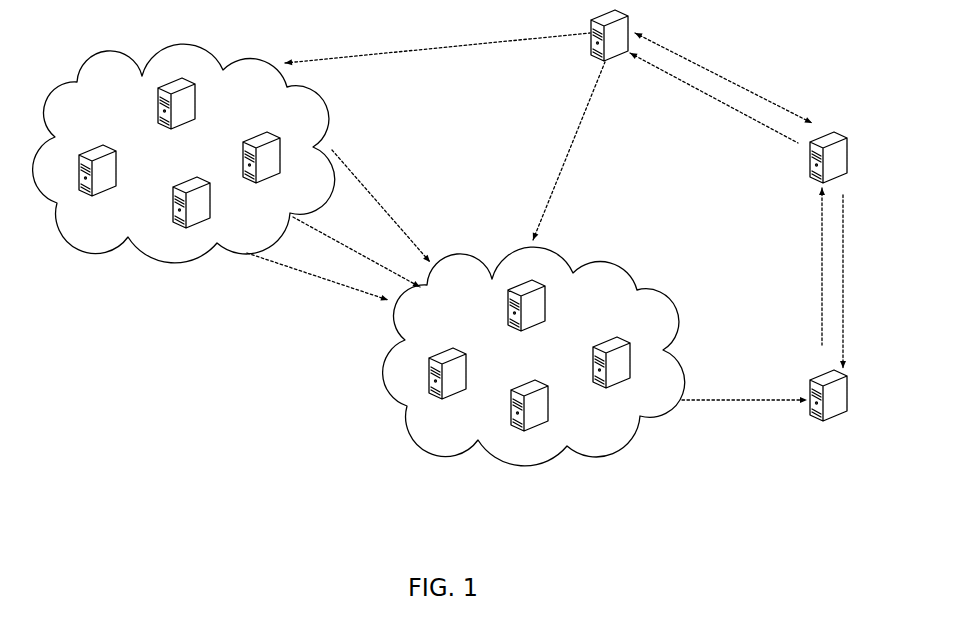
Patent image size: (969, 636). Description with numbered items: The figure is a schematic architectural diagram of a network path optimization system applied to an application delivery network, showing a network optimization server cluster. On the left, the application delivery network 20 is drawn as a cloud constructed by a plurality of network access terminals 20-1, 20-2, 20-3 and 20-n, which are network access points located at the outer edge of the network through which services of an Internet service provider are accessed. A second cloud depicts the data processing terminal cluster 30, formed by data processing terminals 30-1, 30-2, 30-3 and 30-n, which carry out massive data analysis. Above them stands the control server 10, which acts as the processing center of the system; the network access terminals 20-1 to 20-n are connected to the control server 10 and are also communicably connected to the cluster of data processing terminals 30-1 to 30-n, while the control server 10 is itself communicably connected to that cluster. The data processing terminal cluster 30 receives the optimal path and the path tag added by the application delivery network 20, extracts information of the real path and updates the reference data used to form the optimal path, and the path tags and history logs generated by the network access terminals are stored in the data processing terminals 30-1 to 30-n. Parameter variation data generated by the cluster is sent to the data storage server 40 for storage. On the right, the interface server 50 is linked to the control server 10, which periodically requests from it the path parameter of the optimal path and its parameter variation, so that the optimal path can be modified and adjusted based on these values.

The control server 10 is at (604, 60).
The application delivery network 20 is at (158, 287).
The network access terminal 20-1 is at (104, 180).
The network access terminal 20-2 is at (181, 114).
The network access terminal 20-3 is at (261, 167).
The network access terminal 20-n is at (191, 212).
The data processing terminal cluster 30 is at (523, 483).
The data processing terminal 30-1 is at (450, 386).
The data processing terminal 30-2 is at (530, 315).
The data processing terminal 30-3 is at (611, 373).
The data processing terminal 30-n is at (528, 415).
The data storage server 40 is at (830, 428).
The interface server 50 is at (816, 188).